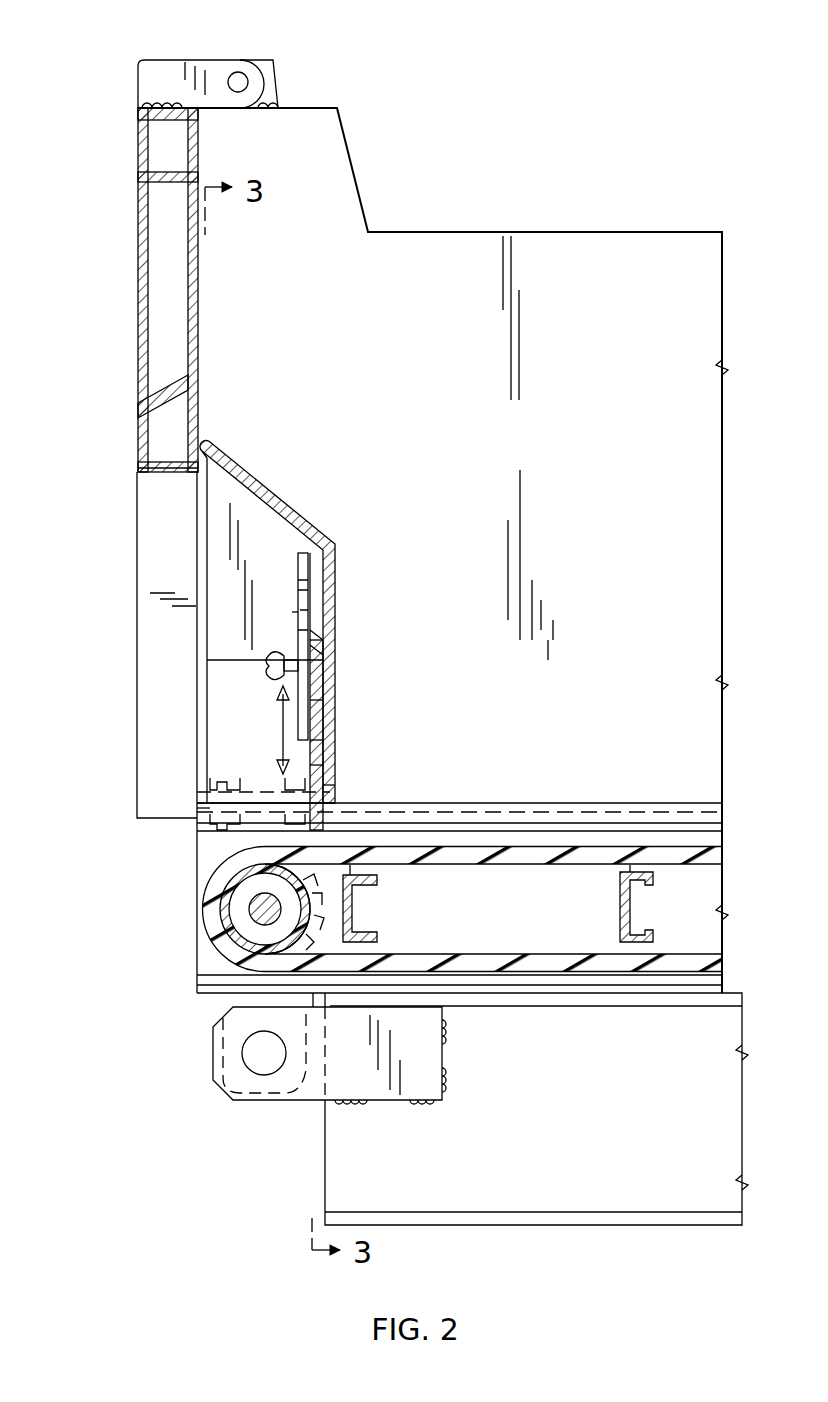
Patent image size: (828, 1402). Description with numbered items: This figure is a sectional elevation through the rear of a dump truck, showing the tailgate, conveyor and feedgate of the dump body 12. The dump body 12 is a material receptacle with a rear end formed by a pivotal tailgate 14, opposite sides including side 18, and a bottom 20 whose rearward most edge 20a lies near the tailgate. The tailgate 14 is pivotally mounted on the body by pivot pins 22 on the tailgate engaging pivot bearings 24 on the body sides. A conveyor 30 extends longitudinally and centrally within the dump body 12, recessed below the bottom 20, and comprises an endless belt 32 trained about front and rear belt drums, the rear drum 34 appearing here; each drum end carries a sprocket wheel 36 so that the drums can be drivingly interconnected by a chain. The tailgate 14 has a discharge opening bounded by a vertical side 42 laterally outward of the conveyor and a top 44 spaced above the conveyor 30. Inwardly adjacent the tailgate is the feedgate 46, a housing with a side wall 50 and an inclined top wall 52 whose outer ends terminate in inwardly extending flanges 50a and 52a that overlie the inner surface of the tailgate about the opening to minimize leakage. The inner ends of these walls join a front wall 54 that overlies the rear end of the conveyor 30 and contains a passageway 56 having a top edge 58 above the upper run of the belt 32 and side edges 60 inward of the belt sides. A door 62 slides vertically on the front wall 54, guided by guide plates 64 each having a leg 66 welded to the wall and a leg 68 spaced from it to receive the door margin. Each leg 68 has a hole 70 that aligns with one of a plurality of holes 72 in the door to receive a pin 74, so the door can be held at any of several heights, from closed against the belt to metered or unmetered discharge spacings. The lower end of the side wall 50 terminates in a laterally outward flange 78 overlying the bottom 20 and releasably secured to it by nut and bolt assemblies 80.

The dump body 12 is at (668, 203).
The tailgate 14 is at (134, 282).
The side 18 is at (500, 230).
The bottom 20 is at (598, 803).
The rearward most edge 20a is at (197, 810).
The pivot pin 22 is at (242, 74).
The pivot bearing 24 is at (268, 80).
The conveyor 30 is at (200, 937).
The endless belt 32 is at (213, 890).
The rear drum 34 is at (223, 948).
The sprocket wheel 36 is at (324, 905).
The vertical side 42 is at (152, 517).
The top 44 is at (150, 478).
The feedgate 46 is at (378, 532).
The side wall 50 is at (228, 578).
The flange 50a is at (200, 541).
The inclined top wall 52 is at (268, 485).
The flange 52a is at (218, 458).
The front wall 54 is at (325, 683).
The passageway 56 is at (337, 782).
The top edge 58 is at (330, 742).
The side edge 60 is at (325, 763).
The door 62 is at (324, 700).
The guide plate 64 is at (296, 612).
The leg 66 is at (318, 595).
The leg 68 is at (308, 570).
The hole 70 is at (328, 640).
The holes 72 is at (296, 680).
The pin 74 is at (268, 667).
The flange 78 is at (195, 797).
The nut and bolt assembly 80 is at (284, 776).